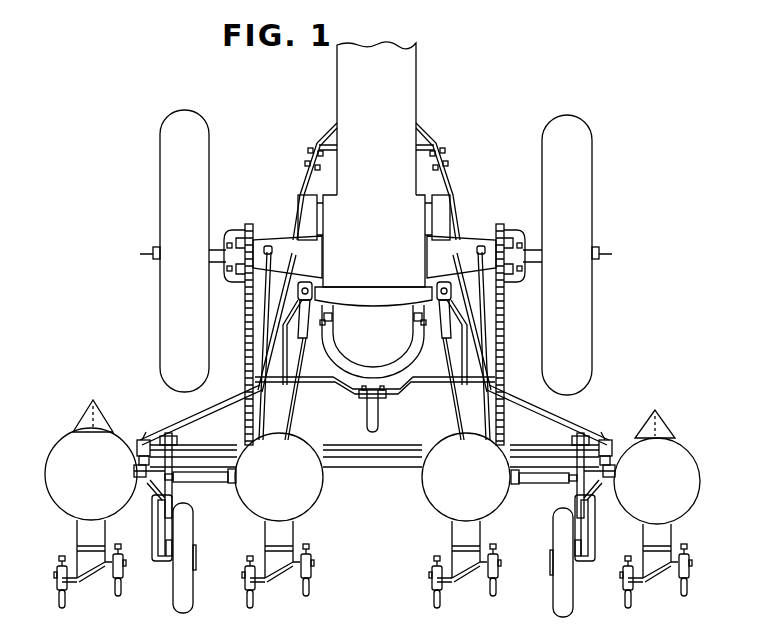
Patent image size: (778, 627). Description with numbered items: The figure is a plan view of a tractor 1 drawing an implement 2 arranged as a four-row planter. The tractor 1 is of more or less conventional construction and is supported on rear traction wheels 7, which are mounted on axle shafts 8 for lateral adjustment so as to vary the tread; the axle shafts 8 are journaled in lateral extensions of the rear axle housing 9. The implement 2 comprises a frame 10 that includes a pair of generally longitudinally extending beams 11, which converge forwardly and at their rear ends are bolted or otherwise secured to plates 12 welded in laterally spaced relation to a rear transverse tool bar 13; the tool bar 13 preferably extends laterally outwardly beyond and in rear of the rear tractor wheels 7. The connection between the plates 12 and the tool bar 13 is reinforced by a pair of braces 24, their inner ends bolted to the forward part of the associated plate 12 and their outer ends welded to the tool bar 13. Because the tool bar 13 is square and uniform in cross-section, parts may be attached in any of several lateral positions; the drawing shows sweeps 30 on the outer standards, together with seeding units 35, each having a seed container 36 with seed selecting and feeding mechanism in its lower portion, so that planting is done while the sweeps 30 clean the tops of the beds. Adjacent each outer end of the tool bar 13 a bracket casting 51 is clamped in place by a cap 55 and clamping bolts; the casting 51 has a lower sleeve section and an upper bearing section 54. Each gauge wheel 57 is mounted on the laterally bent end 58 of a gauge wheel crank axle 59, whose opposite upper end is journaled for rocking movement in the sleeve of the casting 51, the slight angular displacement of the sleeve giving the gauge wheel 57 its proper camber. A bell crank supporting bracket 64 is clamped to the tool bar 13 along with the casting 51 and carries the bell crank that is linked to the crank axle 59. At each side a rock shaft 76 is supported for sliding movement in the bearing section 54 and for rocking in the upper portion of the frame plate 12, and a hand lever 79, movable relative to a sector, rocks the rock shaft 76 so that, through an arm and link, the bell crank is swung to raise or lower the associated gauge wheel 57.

The tractor 1 is at (430, 80).
The implement 2 is at (378, 493).
The rear traction wheels 7 is at (190, 122).
The axle shafts 8 is at (152, 255).
The rear axle housing 9 is at (283, 247).
The frame 10 is at (298, 185).
The beams 11 is at (290, 278).
The plates 12 is at (255, 413).
The tool bar 13 is at (209, 462).
The braces 24 is at (205, 405).
The sweeps 30 is at (82, 421).
The seeding units 35 is at (53, 505).
The seed container 36 is at (68, 457).
The bracket casting 51 is at (139, 440).
The bearing section 54 is at (142, 440).
The cap 55 is at (135, 467).
The gauge wheel 57 is at (185, 600).
The laterally bent end 58 is at (157, 557).
The gauge wheel crank axle 59 is at (152, 524).
The bell crank supporting bracket 64 is at (152, 487).
The rock shaft 76 is at (192, 446).
The hand lever 79 is at (265, 318).